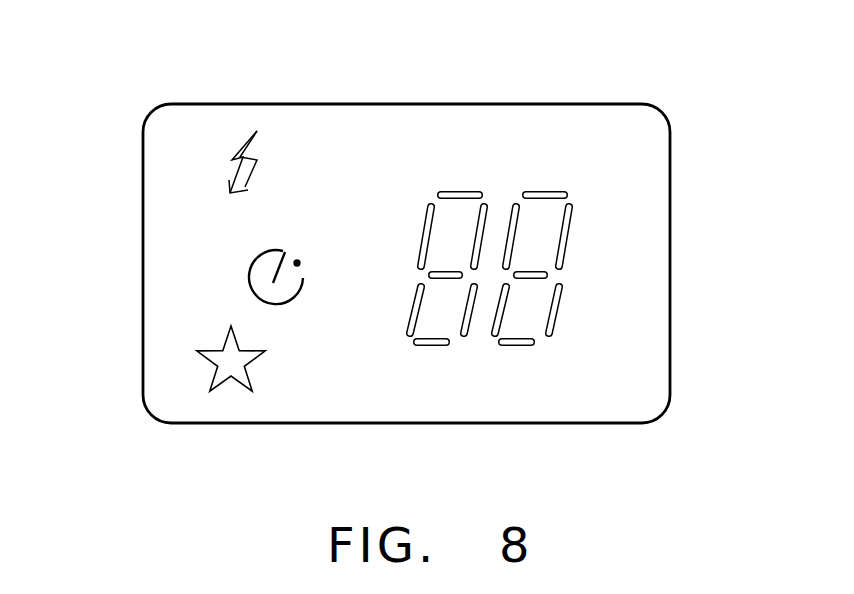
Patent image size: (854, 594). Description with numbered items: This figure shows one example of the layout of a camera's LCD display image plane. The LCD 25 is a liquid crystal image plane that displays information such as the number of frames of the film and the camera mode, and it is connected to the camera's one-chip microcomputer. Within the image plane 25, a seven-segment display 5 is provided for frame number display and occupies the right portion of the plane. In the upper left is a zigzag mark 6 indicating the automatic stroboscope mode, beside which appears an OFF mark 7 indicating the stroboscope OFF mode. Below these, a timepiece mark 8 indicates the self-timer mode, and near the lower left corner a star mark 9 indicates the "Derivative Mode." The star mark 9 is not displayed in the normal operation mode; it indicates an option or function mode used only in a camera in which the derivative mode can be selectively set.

The LCD 25 is at (136, 82).
The numeric seven-segment display 5 is at (517, 188).
The zigzag mark 6 is at (255, 130).
The OFF indicator 7 is at (342, 138).
The timepiece mark 8 is at (190, 273).
The star mark 9 is at (228, 394).